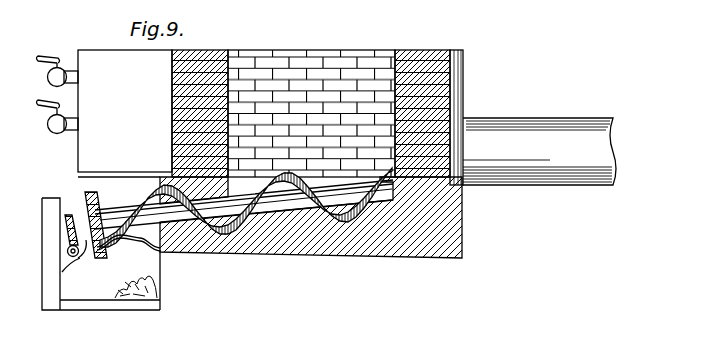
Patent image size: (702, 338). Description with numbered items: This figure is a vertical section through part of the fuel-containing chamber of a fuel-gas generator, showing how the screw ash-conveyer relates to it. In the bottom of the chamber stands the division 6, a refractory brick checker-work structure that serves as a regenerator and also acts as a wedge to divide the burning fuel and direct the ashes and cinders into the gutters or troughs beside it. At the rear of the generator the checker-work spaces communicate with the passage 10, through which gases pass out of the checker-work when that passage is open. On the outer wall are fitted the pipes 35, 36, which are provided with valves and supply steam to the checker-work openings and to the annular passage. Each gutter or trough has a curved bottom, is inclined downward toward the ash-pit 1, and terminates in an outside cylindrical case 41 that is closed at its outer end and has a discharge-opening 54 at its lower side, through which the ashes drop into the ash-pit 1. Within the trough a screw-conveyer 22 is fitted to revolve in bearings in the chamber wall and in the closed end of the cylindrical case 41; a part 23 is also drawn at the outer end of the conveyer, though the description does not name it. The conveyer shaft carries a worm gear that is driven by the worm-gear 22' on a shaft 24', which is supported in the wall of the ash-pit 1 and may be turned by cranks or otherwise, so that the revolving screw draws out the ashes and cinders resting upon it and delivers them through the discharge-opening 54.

The ash-pit 1 is at (101, 254).
The division 6 is at (311, 113).
The passage 10 is at (539, 151).
The screw-conveyer 22 is at (246, 207).
The worm-gear 22' is at (77, 270).
The feed plate 23 is at (73, 223).
The shaft 24' is at (52, 250).
The pipe 35 is at (58, 63).
The pipe 36 is at (50, 117).
The cylindrical case 41 is at (239, 219).
The discharge-opening 54 is at (128, 247).